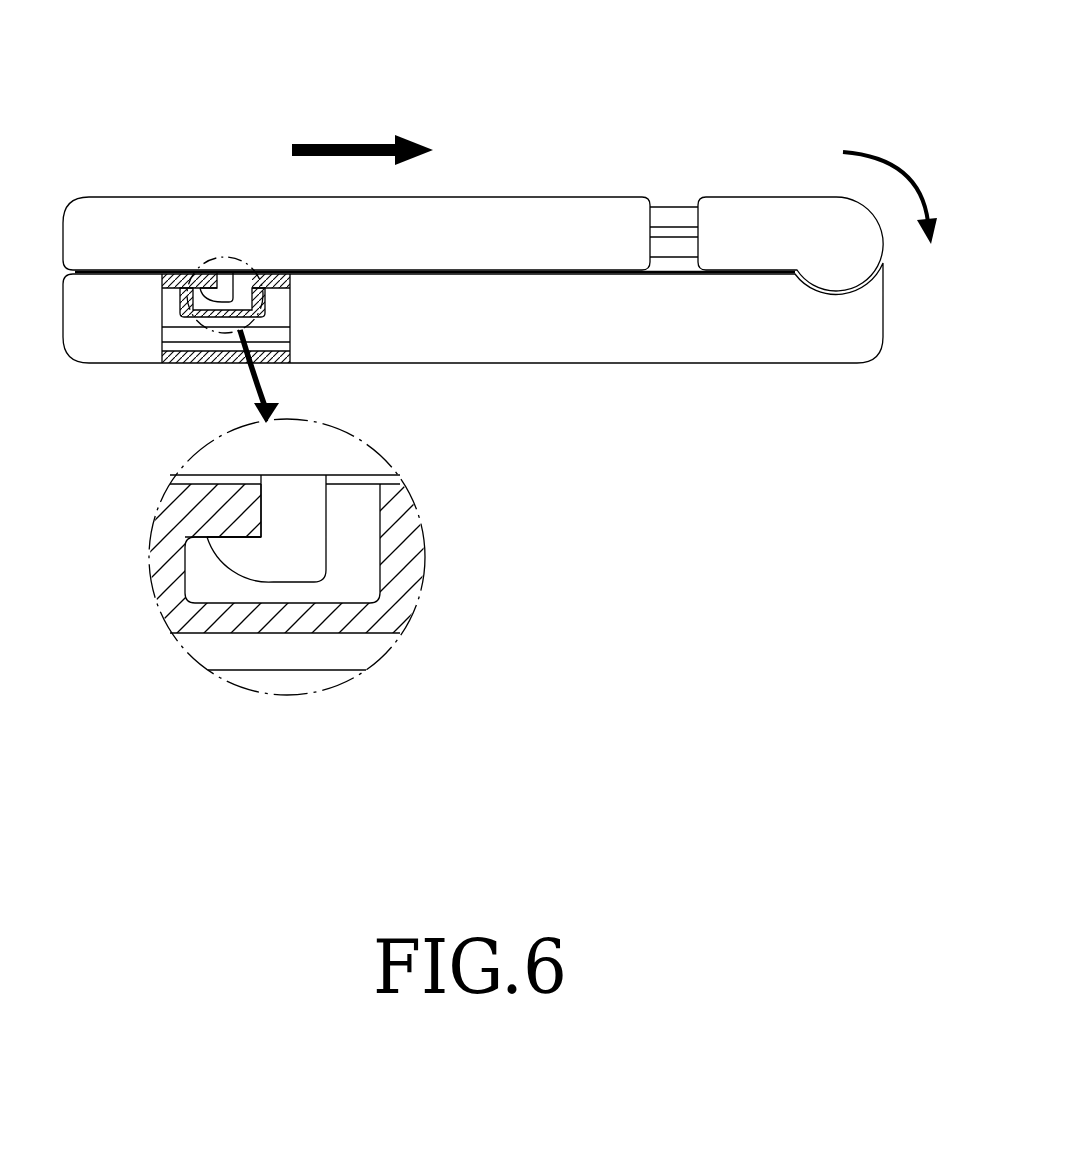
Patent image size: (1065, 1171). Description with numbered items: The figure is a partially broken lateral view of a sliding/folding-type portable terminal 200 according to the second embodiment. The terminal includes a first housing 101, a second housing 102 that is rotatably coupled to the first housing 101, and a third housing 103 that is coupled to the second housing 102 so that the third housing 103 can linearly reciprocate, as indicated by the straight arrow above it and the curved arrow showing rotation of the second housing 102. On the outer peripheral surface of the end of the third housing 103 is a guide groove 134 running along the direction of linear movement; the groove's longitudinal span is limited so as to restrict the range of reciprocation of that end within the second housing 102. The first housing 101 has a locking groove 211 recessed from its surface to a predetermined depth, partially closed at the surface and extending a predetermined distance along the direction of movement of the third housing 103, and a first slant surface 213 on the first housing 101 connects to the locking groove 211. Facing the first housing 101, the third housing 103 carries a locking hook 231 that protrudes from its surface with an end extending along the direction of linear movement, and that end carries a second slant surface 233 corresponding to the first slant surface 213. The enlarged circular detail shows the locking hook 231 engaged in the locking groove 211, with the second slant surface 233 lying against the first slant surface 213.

The sliding/folding-type portable terminal 200 is at (262, 53).
The first housing 101 is at (704, 375).
The second housing 102 is at (764, 197).
The third housing 103 is at (537, 199).
The guide groove 134 is at (675, 230).
The locking groove 211 is at (353, 592).
The first slant surface 213 is at (213, 484).
The locking hook 231 is at (310, 537).
The second slant surface 233 is at (232, 558).